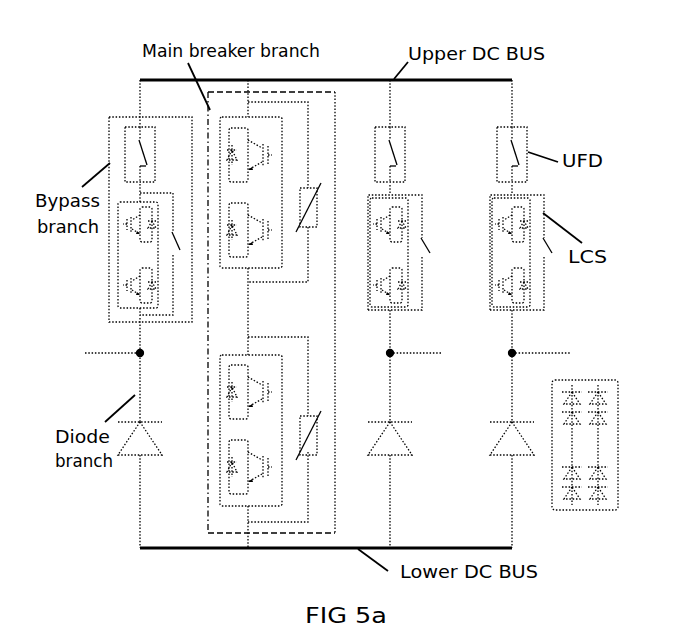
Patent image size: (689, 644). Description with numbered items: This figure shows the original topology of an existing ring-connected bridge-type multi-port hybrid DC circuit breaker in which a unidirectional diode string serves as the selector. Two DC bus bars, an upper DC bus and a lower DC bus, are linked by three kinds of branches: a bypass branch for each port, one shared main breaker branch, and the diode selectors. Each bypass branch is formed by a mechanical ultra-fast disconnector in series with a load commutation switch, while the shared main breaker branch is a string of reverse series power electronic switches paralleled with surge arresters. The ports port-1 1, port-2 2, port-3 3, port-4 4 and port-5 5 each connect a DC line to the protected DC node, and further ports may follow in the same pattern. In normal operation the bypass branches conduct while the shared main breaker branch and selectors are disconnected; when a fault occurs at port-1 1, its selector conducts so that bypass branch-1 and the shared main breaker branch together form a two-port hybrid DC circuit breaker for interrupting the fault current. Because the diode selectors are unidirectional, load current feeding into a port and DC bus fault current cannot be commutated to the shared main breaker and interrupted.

The port- 1 is at (114, 345).
The port- 2 is at (415, 345).
The port- 3 is at (532, 345).
The port- 4 is at (568, 353).
The port- 5 is at (585, 426).